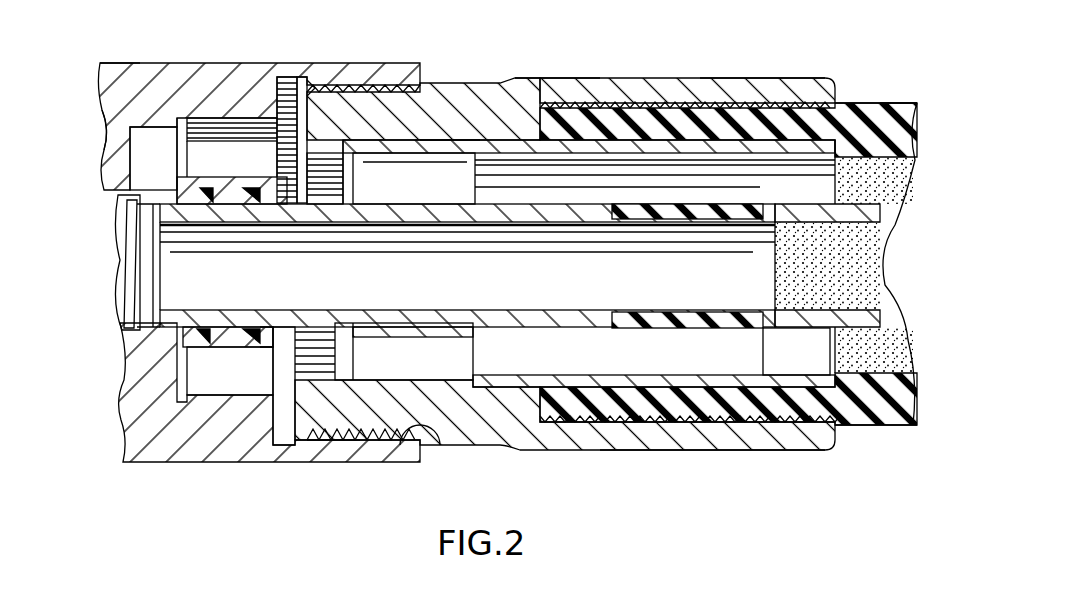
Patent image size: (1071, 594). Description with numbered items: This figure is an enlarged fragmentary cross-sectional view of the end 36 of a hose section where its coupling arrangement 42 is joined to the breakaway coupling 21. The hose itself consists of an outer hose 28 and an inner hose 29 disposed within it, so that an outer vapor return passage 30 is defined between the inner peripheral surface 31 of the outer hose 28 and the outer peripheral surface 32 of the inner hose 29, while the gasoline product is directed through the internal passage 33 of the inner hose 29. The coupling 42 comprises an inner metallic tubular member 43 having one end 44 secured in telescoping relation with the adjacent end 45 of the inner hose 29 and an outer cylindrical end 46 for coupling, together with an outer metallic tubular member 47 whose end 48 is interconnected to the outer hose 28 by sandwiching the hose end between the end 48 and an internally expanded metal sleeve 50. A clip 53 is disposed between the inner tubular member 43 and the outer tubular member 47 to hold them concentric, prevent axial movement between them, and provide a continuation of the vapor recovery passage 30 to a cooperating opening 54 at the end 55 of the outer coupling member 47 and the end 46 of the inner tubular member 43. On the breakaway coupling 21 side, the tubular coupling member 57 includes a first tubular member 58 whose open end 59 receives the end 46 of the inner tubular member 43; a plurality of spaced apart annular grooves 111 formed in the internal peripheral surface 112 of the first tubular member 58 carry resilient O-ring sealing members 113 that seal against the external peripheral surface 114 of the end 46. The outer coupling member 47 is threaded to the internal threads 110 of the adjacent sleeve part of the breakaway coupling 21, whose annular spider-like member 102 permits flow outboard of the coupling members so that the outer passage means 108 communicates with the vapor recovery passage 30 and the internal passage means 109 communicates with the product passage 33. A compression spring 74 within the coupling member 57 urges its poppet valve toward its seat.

The breakaway coupling 21 is at (140, 50).
The outer hose 28 is at (862, 103).
The inner hose 29 is at (820, 327).
The outer vapor return passage 30 is at (880, 415).
The inner peripheral surface of the outer hose 31 is at (908, 103).
The outer peripheral surface of the inner hose 32 is at (833, 195).
The internal passage of the inner hose 33 is at (880, 258).
The end of the hose section 36 is at (840, 425).
The coupling arrangement 42 is at (562, 68).
The inner metallic tubular member 43 is at (595, 224).
The one end of the inner tubular member 44 is at (755, 316).
The adjacent end of the inner hose 45 is at (770, 312).
The outer cylindrical end of the inner tubular member 46 is at (228, 332).
The outer metallic tubular member 47 is at (526, 78).
The end of the outer coupling member 48 is at (768, 78).
The internally expanded metal sleeve 50 is at (700, 140).
The clip 53 is at (440, 137).
The cooperating opening 54 is at (320, 80).
The end of the outer coupling member 55 is at (325, 432).
The tubular coupling member 57 is at (218, 172).
The first tubular member 58 is at (118, 170).
The open end of the first tubular member 59 is at (268, 200).
The compression spring 74 is at (112, 285).
The spider-like member 102 is at (112, 97).
The outer passage means 108 is at (118, 141).
The internal passage means 109 is at (116, 230).
The internal threads 110 is at (424, 446).
The annular grooves 111 is at (275, 338).
The internal peripheral surface of the first tubular member 112 is at (270, 335).
The resilient O-ring sealing member 113 is at (257, 328).
The external peripheral surface of the inner tubular member end 114 is at (233, 200).